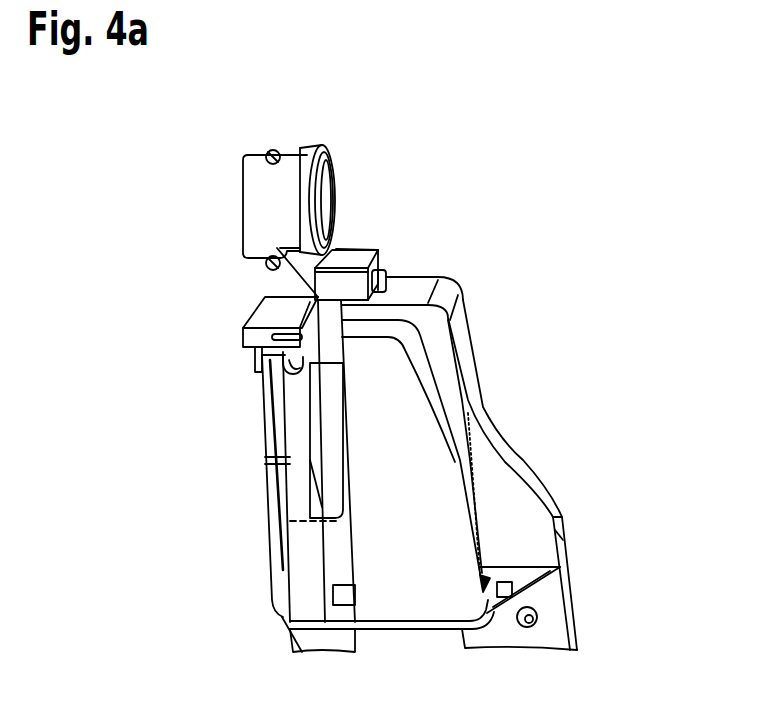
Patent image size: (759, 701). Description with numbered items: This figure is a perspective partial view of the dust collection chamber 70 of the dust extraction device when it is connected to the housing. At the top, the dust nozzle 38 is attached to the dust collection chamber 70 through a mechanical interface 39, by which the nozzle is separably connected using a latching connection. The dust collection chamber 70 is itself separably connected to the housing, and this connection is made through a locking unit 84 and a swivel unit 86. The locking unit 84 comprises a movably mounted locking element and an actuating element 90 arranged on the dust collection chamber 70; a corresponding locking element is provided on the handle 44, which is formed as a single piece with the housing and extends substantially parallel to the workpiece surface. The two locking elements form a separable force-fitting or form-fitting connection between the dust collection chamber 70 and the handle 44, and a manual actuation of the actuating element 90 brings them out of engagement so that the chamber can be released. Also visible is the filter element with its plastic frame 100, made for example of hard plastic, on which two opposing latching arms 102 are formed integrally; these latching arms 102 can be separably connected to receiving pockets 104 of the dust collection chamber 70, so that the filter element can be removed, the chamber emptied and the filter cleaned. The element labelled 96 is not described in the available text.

The dust nozzle 38 is at (291, 128).
The mechanical interface 39 is at (405, 258).
The swivel unit 86 is at (256, 312).
The hook 96 is at (262, 372).
The plastic frame 100 is at (273, 422).
The receiving pockets 104 is at (293, 477).
The latching arms 102 is at (332, 508).
The dust collection chamber 70 is at (447, 372).
The locking unit 84 is at (608, 521).
The actuating element 90 is at (563, 537).
The handle 44 is at (603, 601).